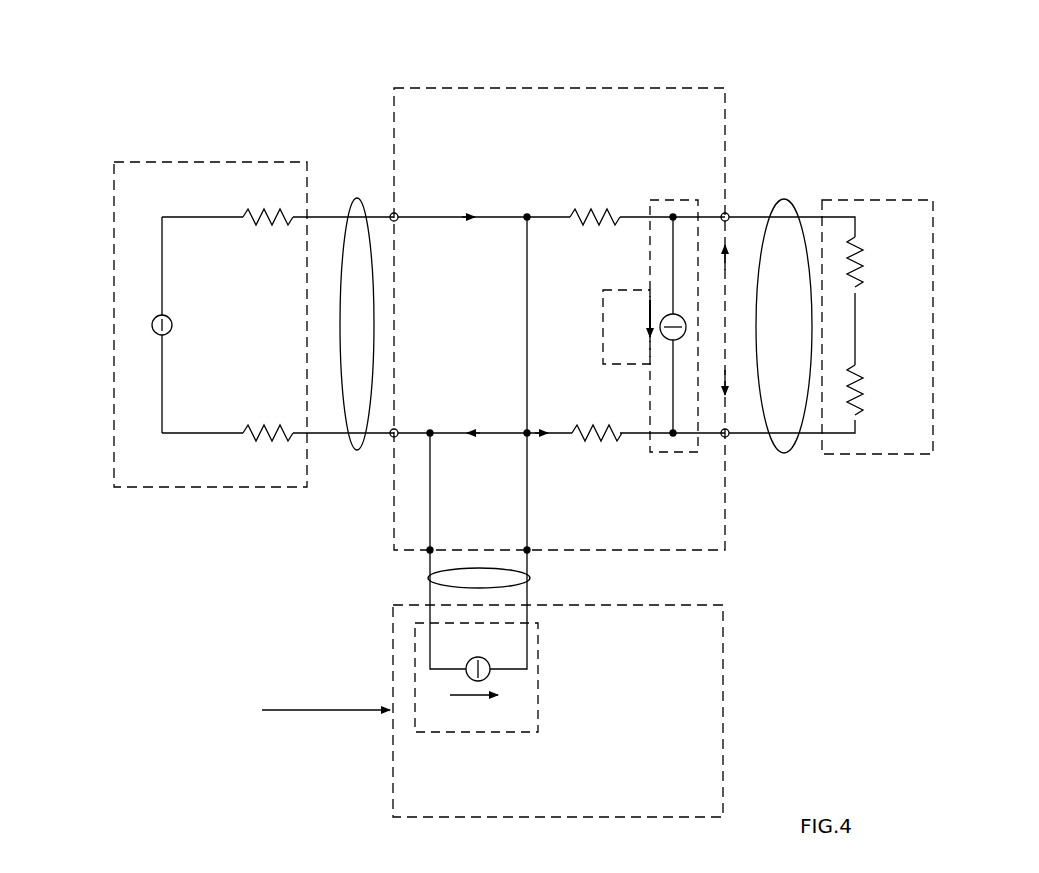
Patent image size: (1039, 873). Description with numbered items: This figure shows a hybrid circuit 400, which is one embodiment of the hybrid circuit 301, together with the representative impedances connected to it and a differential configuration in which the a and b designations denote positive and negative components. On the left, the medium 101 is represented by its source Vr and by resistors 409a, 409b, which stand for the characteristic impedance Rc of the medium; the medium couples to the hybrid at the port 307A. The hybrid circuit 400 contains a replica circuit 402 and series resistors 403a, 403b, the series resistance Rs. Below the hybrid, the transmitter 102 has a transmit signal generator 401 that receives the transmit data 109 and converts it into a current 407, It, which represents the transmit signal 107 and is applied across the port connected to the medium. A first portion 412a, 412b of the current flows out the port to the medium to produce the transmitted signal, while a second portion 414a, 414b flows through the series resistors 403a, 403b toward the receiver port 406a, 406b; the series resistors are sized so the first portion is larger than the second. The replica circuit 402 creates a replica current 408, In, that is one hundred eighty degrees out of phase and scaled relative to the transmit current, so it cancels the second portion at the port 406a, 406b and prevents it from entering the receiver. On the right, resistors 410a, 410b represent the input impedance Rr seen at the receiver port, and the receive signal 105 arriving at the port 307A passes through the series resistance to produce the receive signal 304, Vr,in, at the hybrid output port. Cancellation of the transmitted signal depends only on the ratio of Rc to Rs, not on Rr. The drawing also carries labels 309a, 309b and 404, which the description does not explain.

The medium 101 is at (175, 160).
The resistor 409a is at (260, 162).
The resistor 409b is at (268, 480).
The receive signal 105 is at (353, 200).
The port 307A is at (397, 214).
The hybrid circuit 400 is at (392, 112).
The first portion of the current 412a is at (498, 214).
The second portion of the current 414a is at (532, 214).
The series resistor 403a is at (628, 216).
The port 406a is at (729, 213).
The replica current 408 is at (603, 330).
The replica circuit 402 is at (655, 455).
The first portion of the current 412b is at (498, 430).
The second portion of the current 414b is at (533, 430).
The series resistor 403b is at (598, 474).
The port 406b is at (728, 437).
The hybrid circuit 301 is at (750, 112).
The conductor 309a is at (428, 548).
The conductor 309b is at (524, 548).
The transmit signal 107 is at (428, 578).
The transmitter 102 is at (725, 710).
The transmit signal generator 401 is at (540, 677).
The current 407 is at (490, 728).
The transmit data 109 is at (272, 710).
The receive signal 304 is at (790, 200).
The line load 404 is at (933, 200).
The resistor 410a is at (872, 258).
The resistor 410b is at (880, 386).